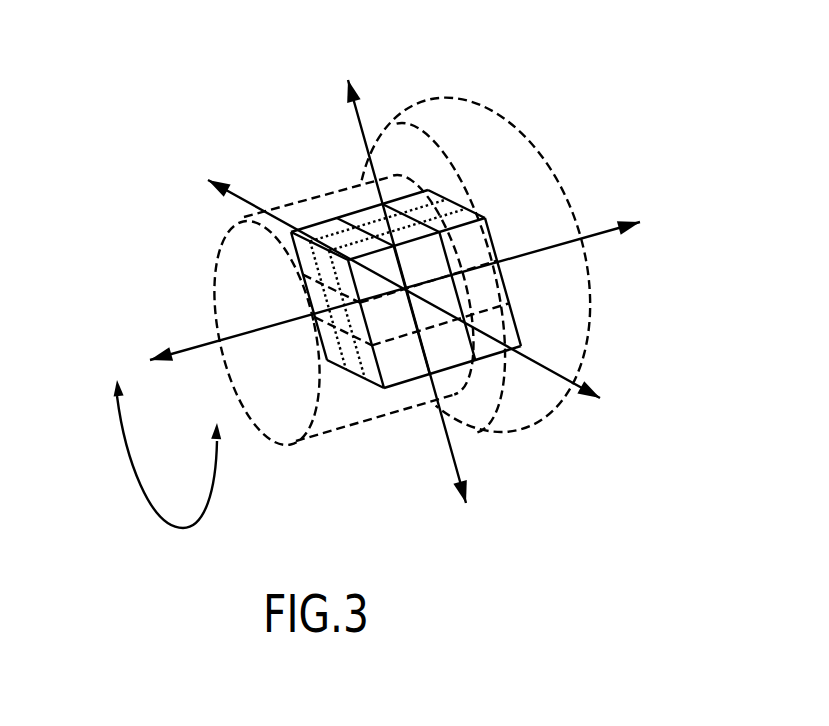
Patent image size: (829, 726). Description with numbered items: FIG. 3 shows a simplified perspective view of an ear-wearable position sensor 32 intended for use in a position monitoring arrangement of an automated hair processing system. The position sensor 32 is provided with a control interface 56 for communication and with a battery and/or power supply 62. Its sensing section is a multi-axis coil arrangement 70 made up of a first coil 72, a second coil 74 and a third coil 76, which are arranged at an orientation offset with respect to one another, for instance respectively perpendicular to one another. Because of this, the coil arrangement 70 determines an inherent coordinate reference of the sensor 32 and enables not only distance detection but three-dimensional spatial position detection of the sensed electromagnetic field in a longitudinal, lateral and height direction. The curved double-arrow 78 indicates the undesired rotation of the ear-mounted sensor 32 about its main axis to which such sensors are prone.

The ear-wearable position sensor 32 is at (168, 242).
The control interface 56 is at (570, 296).
The battery and/or power supply 62 is at (451, 278).
The coil arrangement 70 is at (269, 160).
The first coil 72 is at (350, 361).
The second coil 74 is at (397, 343).
The third coil 76 is at (438, 250).
The curved double-arrow indicating undesired sensor rotation 78 is at (148, 500).